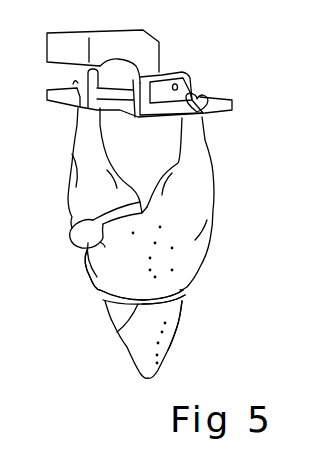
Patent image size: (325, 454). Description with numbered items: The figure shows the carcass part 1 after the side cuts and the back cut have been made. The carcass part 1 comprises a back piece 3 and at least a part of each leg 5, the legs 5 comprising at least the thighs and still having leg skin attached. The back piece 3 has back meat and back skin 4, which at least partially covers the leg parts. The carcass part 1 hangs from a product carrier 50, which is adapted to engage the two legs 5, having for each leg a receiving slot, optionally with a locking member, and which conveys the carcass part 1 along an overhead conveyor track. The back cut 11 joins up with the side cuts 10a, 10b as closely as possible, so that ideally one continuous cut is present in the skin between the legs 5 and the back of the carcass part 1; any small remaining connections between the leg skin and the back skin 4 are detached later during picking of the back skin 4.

The carcass part 1 is at (232, 137).
The back piece 3 is at (141, 358).
The back skin 4 is at (172, 318).
The leg 5 is at (78, 163).
The side cut 10a is at (107, 301).
The side cut 10b is at (182, 296).
The back cut 11 is at (117, 332).
The product carrier 50 is at (150, 63).